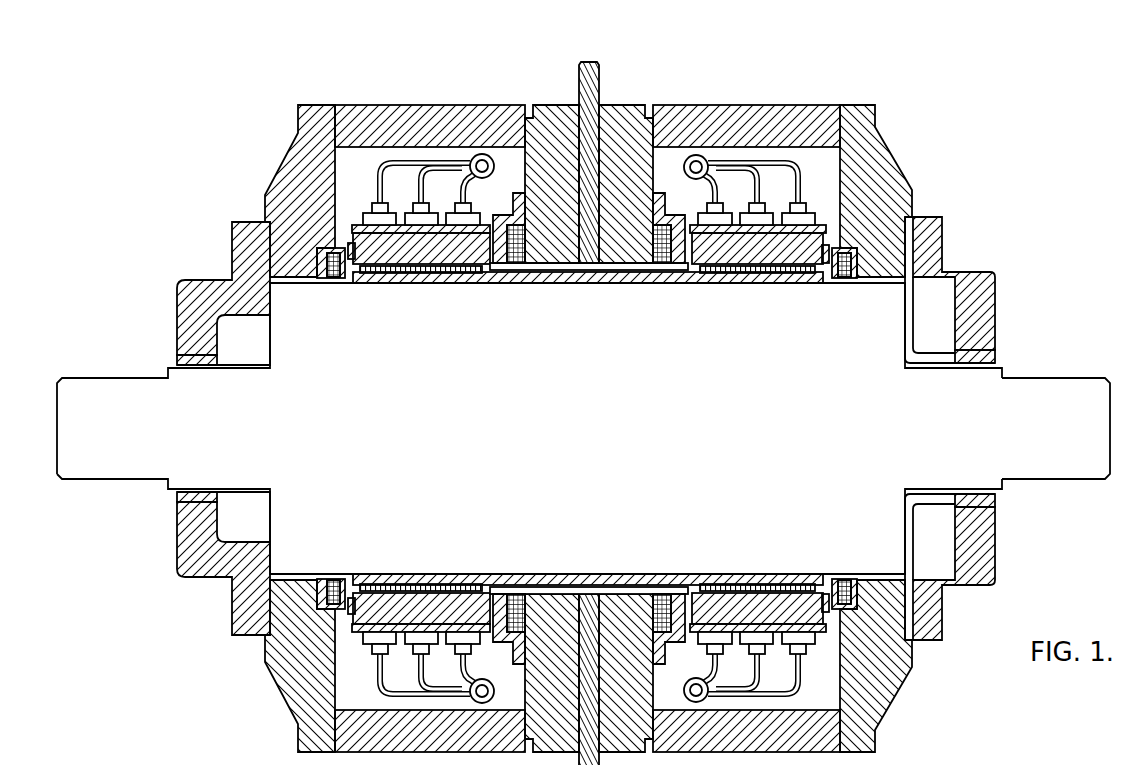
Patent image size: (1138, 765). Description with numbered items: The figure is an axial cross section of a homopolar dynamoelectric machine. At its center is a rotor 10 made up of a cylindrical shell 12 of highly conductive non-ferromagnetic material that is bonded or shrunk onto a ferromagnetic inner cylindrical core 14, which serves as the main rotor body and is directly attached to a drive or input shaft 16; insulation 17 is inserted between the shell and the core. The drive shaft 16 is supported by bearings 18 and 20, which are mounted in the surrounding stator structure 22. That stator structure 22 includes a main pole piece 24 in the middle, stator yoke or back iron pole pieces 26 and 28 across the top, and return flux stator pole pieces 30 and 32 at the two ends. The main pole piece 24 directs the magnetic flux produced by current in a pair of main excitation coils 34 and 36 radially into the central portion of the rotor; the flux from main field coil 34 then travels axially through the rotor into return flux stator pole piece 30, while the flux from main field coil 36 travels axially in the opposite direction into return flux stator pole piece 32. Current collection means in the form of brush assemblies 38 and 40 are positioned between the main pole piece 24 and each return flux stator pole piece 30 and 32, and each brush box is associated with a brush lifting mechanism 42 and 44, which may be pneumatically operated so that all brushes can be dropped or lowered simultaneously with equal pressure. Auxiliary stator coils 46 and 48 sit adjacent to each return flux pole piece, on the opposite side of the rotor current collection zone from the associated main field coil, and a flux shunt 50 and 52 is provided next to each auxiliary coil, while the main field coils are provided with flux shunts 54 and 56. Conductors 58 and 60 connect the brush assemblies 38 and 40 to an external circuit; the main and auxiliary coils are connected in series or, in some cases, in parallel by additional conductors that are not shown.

The rotor 10 is at (893, 505).
The cylindrical shell 12 is at (641, 281).
The inner cylindrical core 14 is at (286, 503).
The drive shaft 16 is at (1069, 462).
The insulation 17 is at (452, 285).
The bearing 18 is at (177, 505).
The bearing 20 is at (990, 358).
The stator structure 22 is at (798, 172).
The main pole piece 24 is at (607, 263).
The stator yoke pole piece 26 is at (751, 117).
The stator yoke pole piece 28 is at (455, 117).
The return flux stator pole piece 30 is at (890, 160).
The return flux stator pole piece 32 is at (296, 152).
The main excitation coil 34 is at (662, 268).
The main excitation coil 36 is at (512, 268).
The brush assembly 38 is at (742, 257).
The brush assembly 40 is at (413, 257).
The brush lifting mechanism 42 is at (800, 187).
The brush lifting mechanism 44 is at (373, 181).
The auxiliary stator coil 46 is at (843, 282).
The auxiliary stator coil 48 is at (330, 280).
The flux shunt 50 is at (826, 268).
The flux shunt 52 is at (351, 264).
The flux shunt 54 is at (681, 215).
The flux shunt 56 is at (500, 215).
The conductor 58 is at (600, 80).
The conductor 60 is at (550, 271).